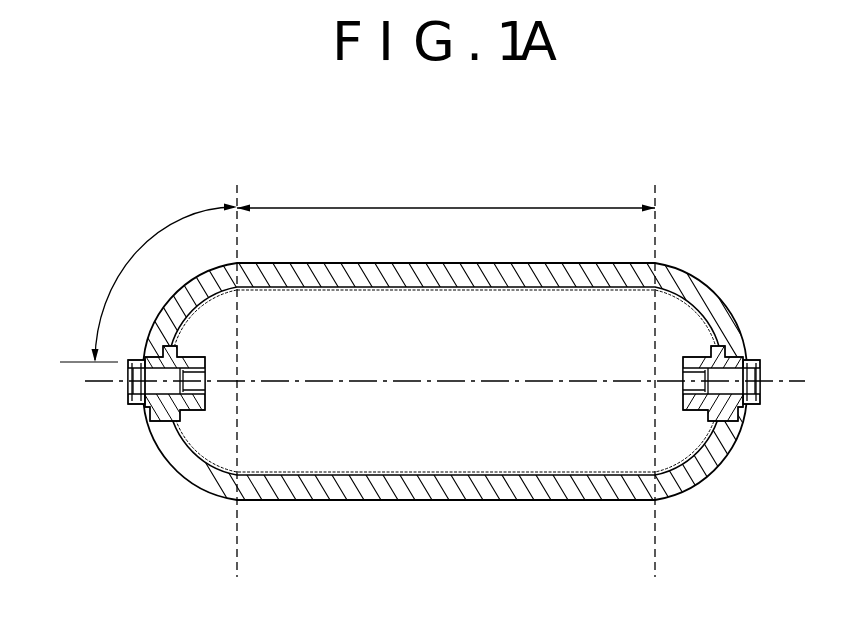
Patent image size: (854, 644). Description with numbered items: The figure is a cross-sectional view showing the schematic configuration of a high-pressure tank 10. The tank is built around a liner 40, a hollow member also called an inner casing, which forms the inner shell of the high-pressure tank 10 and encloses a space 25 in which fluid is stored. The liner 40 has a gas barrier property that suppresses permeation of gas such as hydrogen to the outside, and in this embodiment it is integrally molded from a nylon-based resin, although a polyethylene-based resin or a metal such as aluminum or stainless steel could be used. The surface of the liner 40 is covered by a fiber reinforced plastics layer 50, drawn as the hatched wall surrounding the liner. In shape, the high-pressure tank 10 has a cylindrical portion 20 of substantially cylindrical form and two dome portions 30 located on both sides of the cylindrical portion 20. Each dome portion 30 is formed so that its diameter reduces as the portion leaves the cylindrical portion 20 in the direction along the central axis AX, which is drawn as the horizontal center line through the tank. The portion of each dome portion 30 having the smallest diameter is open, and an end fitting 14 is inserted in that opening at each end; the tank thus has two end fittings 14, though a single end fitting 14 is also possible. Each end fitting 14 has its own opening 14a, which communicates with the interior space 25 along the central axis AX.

The high-pressure tank 10 is at (436, 342).
The end fitting 14 is at (196, 350).
The opening 14a is at (196, 386).
The cylindrical portion 20 is at (446, 376).
The space 25 is at (459, 426).
The dome portion 30 is at (148, 283).
The liner 40 is at (441, 293).
The fiber reinforced plastics layer 50 is at (328, 272).
The central axis AX is at (555, 380).